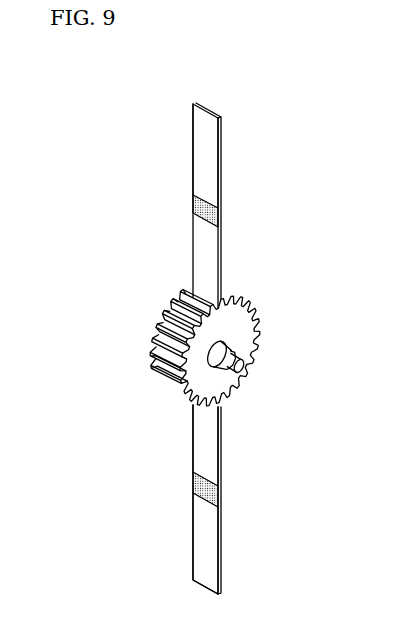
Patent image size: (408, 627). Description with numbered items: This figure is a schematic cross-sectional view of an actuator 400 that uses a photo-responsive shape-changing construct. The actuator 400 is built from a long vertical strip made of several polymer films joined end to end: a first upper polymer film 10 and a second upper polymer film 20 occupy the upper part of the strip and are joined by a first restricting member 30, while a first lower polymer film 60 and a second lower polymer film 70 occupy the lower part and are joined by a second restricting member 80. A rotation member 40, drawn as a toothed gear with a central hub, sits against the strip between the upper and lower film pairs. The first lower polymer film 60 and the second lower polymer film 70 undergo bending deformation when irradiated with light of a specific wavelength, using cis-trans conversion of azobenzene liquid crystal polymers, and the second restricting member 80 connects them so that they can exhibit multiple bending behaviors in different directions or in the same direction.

The actuator 400 is at (99, 113).
The 1-1 polymer film 10 is at (219, 260).
The 1-2 polymer film 20 is at (219, 158).
The first restricting member 30 is at (219, 215).
The rotation member 40 is at (256, 364).
The 2-1 polymer film 60 is at (219, 438).
The 2-2 polymer film 70 is at (219, 540).
The second restricting member 80 is at (219, 495).